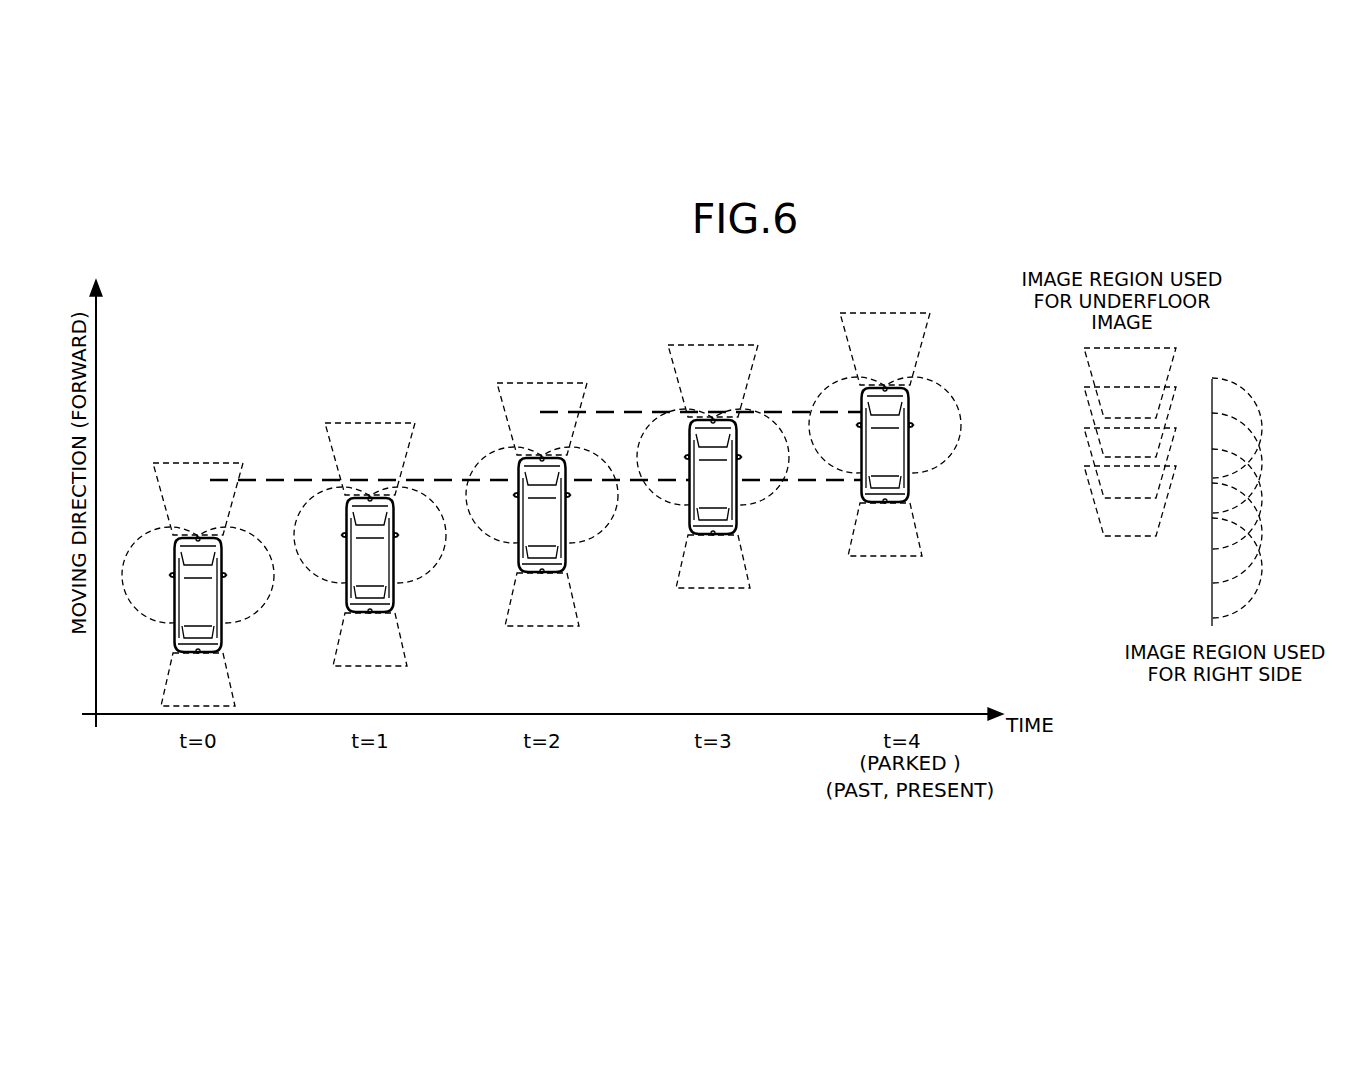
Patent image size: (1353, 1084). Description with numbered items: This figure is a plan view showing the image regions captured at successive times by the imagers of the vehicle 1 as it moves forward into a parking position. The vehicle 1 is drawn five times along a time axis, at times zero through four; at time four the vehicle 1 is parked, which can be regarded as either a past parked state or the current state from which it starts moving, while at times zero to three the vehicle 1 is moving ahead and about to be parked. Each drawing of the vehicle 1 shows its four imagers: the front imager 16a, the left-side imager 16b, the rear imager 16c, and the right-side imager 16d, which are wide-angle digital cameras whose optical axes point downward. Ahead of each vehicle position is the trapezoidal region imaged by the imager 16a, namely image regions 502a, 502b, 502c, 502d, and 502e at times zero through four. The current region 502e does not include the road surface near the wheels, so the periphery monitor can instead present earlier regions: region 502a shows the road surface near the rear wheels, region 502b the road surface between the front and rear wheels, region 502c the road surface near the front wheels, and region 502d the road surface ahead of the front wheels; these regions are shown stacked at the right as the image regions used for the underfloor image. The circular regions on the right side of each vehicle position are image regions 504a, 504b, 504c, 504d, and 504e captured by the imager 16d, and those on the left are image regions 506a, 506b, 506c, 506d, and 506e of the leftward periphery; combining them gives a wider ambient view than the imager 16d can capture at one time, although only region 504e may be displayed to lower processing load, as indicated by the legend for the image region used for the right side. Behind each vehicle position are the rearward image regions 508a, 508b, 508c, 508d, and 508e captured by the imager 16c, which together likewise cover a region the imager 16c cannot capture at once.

The vehicle 1 is at (525, 533).
The imager 16a is at (502, 437).
The imager 16b is at (478, 530).
The imager 16c is at (579, 582).
The imager 16d is at (600, 530).
The image region 502a is at (664, 477).
The image region 502b is at (750, 438).
The image region 502c is at (836, 397).
The image region 502d is at (922, 359).
The image region 502e is at (885, 325).
The image region 504a is at (755, 563).
The image region 504b is at (841, 514).
The image region 504c is at (927, 485).
The image region 504d is at (1013, 441).
The image region 504e is at (1098, 415).
The image region 506a is at (156, 566).
The image region 506b is at (316, 507).
The image region 506c is at (489, 467).
The image region 506d is at (659, 429).
The image region 506e is at (833, 394).
The image region 508a is at (232, 679).
The image region 508b is at (408, 639).
The image region 508c is at (542, 628).
The image region 508d is at (714, 589).
The image region 508e is at (885, 556).